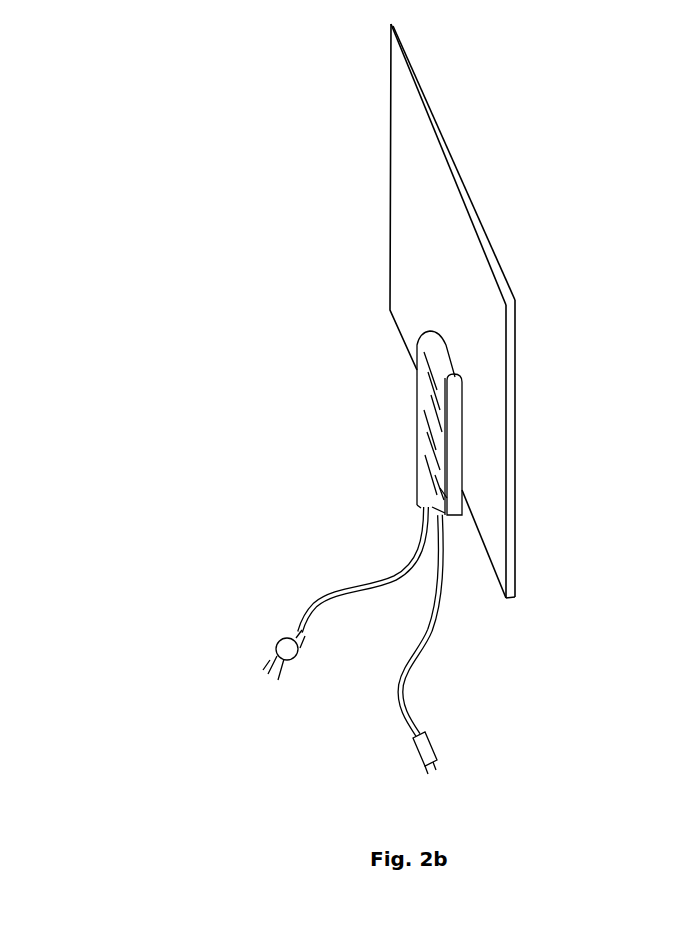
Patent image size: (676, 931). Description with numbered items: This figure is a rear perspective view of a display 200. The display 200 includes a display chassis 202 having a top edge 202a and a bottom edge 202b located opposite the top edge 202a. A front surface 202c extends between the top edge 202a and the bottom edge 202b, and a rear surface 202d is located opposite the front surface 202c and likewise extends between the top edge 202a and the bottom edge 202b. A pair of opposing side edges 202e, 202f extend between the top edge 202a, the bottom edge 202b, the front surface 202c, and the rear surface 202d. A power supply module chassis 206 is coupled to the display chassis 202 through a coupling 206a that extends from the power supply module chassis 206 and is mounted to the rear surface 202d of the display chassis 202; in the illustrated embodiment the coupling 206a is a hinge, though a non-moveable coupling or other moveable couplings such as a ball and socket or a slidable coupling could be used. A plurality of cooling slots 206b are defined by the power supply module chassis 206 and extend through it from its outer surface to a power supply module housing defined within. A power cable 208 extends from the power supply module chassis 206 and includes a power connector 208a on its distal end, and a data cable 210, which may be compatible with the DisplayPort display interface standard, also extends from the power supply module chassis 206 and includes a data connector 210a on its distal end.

The display 200 is at (176, 263).
The display chassis 202 is at (512, 600).
The top edge 202a is at (441, 137).
The bottom edge 202b is at (487, 548).
The front surface 202c is at (485, 243).
The rear surface 202d is at (418, 243).
The side edge 202e is at (384, 140).
The side edge 202f is at (509, 435).
The power supply module chassis 206 is at (455, 483).
The coupling 206a is at (453, 378).
The cooling slots 206b is at (425, 452).
The power cable 208 is at (365, 582).
The power connector 208a is at (270, 647).
The data cable 210 is at (422, 640).
The data connector 210a is at (420, 745).